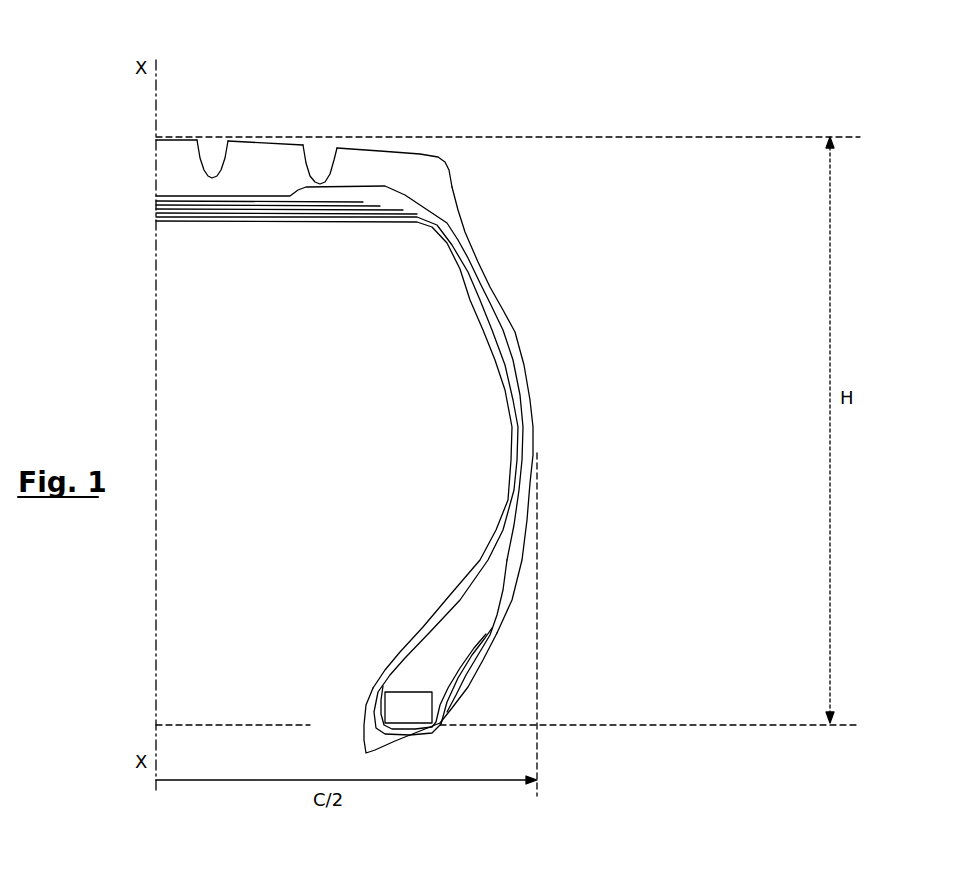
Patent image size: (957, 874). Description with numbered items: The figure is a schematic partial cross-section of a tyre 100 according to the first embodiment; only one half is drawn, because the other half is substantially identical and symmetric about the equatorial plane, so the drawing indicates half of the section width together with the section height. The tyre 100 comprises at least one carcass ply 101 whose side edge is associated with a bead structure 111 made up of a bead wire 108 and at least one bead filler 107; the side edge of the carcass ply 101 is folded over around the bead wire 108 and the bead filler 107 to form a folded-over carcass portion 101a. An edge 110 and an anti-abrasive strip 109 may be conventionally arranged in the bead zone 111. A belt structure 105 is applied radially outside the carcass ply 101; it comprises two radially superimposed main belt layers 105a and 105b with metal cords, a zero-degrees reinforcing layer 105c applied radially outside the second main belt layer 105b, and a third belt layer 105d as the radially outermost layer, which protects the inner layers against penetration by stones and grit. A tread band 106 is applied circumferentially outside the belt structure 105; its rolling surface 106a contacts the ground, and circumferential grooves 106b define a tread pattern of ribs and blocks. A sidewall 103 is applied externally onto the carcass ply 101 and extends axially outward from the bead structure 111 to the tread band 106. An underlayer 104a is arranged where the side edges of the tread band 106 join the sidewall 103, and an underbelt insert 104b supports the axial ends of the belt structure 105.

The tyre 100 is at (503, 120).
The carcass ply 101 is at (488, 325).
The folded-over carcass portion 101a is at (453, 683).
The sidewall 103 is at (525, 480).
The underlayer 104a is at (423, 213).
The underbelt insert 104b is at (448, 255).
The belt structure 105 is at (248, 234).
The radially innermost main belt layer 105a is at (410, 220).
The radially outermost main belt layer 105b is at (390, 212).
The zero-degrees reinforcing layer 105c is at (367, 203).
The third belt layer 105d is at (187, 195).
The tread band 106 is at (405, 168).
The rolling surface 106a is at (363, 147).
The circumferential grooves 106b is at (318, 157).
The bead filler 107 is at (468, 607).
The bead wire 108 is at (405, 705).
The anti-abrasive strip 109 is at (500, 647).
The edge 110 is at (473, 665).
The bead structure 111 is at (348, 690).